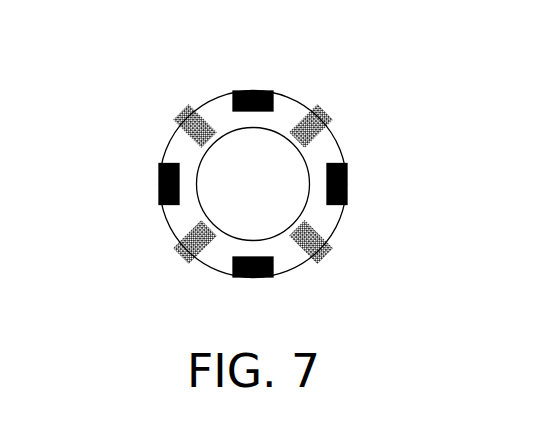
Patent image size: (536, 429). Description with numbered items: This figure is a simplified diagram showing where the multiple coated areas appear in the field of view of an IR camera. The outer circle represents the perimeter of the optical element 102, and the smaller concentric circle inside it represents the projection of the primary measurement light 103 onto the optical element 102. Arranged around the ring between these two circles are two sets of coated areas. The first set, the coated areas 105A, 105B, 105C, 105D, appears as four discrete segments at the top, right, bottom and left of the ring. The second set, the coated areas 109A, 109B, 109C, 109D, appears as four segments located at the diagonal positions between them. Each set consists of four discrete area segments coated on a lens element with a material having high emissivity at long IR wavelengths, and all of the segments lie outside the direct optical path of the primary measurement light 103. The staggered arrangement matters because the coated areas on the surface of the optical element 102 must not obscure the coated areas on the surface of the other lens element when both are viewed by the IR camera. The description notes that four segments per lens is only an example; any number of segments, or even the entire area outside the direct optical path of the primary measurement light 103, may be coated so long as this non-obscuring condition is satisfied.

The optical element 102 is at (287, 93).
The primary measurement light 103 is at (290, 143).
The coated area 105A is at (253, 90).
The coated area 105B is at (347, 177).
The coated area 105C is at (259, 277).
The coated area 105D is at (160, 185).
The coated area 109A is at (322, 118).
The coated area 109B is at (320, 247).
The coated area 109C is at (187, 243).
The coated area 109D is at (187, 117).